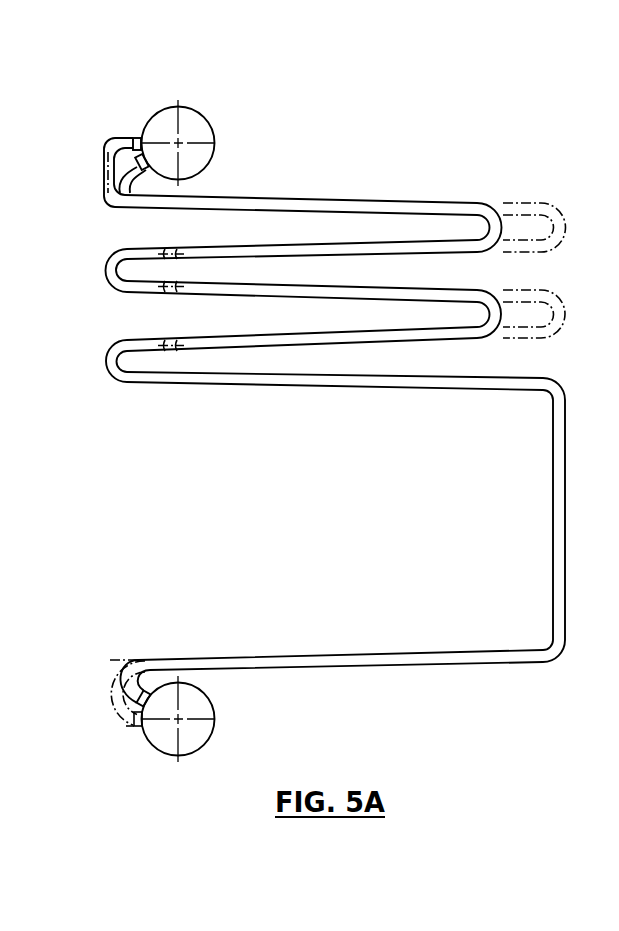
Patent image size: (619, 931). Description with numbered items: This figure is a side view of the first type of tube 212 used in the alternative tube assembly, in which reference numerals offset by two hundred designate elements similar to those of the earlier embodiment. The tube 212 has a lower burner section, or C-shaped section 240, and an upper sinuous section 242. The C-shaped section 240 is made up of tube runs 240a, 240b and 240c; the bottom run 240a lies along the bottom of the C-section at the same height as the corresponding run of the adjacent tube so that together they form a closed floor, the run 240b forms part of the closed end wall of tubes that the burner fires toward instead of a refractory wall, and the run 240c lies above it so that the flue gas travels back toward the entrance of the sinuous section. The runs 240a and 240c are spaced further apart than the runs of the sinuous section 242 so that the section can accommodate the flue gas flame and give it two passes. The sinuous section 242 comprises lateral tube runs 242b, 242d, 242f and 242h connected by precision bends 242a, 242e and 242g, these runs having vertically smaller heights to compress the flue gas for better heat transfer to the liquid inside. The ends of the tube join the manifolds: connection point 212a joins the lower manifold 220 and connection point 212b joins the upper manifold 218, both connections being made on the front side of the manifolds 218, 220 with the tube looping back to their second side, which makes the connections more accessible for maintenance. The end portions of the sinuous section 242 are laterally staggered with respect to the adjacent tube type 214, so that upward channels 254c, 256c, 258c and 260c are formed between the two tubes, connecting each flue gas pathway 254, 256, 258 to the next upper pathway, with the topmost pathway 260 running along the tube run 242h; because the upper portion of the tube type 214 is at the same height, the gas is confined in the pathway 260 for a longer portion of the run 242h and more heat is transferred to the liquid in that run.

The tube type 212 is at (414, 155).
The connection point 212a is at (139, 662).
The connection point 212b is at (136, 139).
The tube type 214 is at (523, 200).
The upper manifold 218 is at (199, 125).
The lower manifold 220 is at (205, 735).
The C-shaped section 240 is at (100, 364).
The tube run 240a is at (348, 669).
The tube run 240b is at (553, 526).
The tube run 240c is at (513, 392).
The sinuous section 242 is at (100, 198).
The precision bend 242a is at (104, 360).
The lateral tube run 242b is at (403, 343).
The lateral tube run 242d is at (440, 305).
The precision bend 242e is at (101, 213).
The lateral tube run 242f is at (233, 246).
The precision bend 242g is at (489, 220).
The lateral tube run 242h is at (305, 200).
The flue gas pathway 254 is at (389, 373).
The upward channel 254c is at (165, 386).
The flue gas pathway 256 is at (356, 328).
The upward channel 256c is at (565, 343).
The flue gas pathway 258 is at (389, 284).
The upward channel 258c is at (170, 296).
The flue gas pathway 260 is at (356, 239).
The upward channel 260c is at (565, 255).